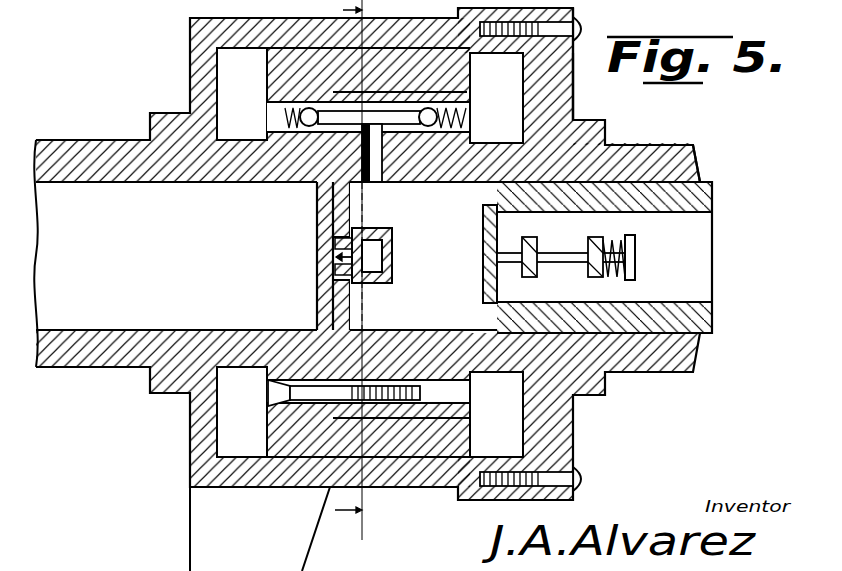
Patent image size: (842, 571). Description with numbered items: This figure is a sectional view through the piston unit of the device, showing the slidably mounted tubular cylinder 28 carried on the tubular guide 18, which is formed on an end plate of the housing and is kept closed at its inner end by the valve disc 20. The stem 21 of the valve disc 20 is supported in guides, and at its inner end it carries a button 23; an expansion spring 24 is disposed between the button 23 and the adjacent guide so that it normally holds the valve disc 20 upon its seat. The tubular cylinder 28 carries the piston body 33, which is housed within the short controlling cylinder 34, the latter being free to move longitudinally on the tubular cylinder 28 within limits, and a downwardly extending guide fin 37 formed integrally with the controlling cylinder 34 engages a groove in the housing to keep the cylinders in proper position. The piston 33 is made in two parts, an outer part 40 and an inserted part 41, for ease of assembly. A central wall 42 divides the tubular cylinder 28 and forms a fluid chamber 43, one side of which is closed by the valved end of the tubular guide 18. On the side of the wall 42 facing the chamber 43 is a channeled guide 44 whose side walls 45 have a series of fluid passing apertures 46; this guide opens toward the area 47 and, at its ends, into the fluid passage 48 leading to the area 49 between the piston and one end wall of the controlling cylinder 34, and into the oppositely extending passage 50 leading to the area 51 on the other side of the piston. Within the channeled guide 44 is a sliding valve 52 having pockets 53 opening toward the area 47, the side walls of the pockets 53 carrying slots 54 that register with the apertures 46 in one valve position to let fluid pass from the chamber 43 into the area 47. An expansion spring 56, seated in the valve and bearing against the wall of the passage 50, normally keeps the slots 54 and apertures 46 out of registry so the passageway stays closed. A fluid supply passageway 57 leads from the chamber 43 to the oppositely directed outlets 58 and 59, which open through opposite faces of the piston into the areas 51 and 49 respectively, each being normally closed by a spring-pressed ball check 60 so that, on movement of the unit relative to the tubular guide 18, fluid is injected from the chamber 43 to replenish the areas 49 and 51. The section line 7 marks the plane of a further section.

The section line 7 is at (350, 278).
The tubular guide 18 is at (700, 214).
The valve disc 20 is at (487, 294).
The stem 21 is at (558, 253).
The button 23 is at (635, 248).
The spring 24 is at (615, 272).
The tubular cylinder 28 is at (670, 150).
The piston body 33 is at (275, 440).
The controlling cylinder 34 is at (194, 437).
The guide fin 37 is at (200, 548).
The outer part of piston 40 is at (435, 443).
The inserted part of piston 41 is at (458, 406).
The wall 42 is at (318, 299).
The fluid chamber 43 is at (573, 117).
The channeled guide 44 is at (392, 270).
The side walls 45 is at (366, 224).
The fluid passing apertures 46 is at (366, 282).
The area 47 is at (114, 326).
The fluid passage 48 is at (368, 250).
The area 49 is at (237, 80).
The passage 50 is at (494, 20).
The area 51 is at (578, 66).
The sliding valve 52 is at (394, 246).
The pockets 53 is at (337, 248).
The slots 54 is at (332, 266).
The expansion spring 56 is at (309, 6).
The fluid supply passageway 57 is at (350, 150).
The outlet 58 is at (560, 67).
The outlet 59 is at (280, 98).
The spring-pressed ball check 60 is at (252, 182).